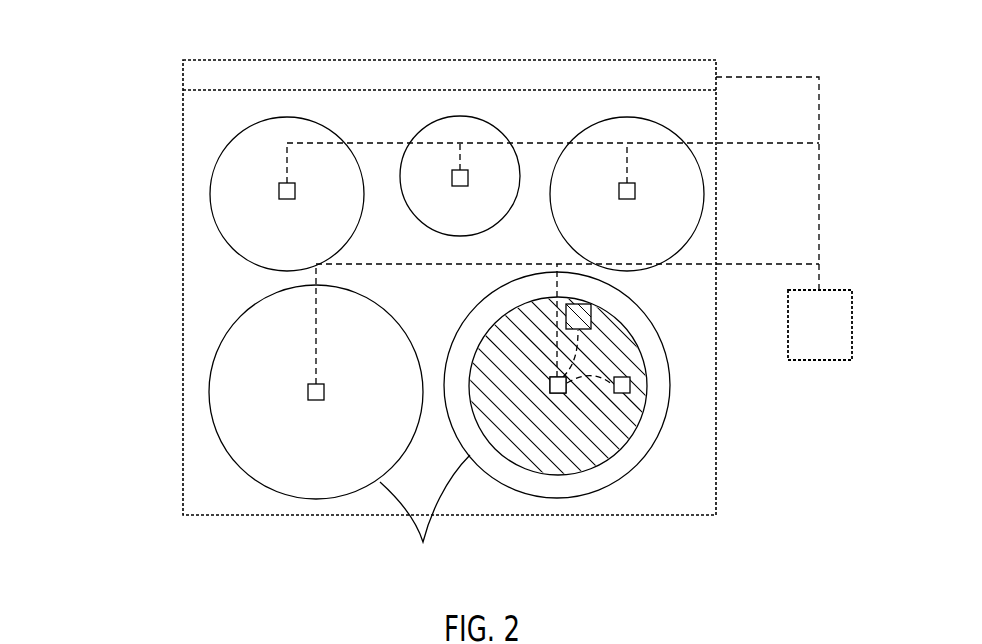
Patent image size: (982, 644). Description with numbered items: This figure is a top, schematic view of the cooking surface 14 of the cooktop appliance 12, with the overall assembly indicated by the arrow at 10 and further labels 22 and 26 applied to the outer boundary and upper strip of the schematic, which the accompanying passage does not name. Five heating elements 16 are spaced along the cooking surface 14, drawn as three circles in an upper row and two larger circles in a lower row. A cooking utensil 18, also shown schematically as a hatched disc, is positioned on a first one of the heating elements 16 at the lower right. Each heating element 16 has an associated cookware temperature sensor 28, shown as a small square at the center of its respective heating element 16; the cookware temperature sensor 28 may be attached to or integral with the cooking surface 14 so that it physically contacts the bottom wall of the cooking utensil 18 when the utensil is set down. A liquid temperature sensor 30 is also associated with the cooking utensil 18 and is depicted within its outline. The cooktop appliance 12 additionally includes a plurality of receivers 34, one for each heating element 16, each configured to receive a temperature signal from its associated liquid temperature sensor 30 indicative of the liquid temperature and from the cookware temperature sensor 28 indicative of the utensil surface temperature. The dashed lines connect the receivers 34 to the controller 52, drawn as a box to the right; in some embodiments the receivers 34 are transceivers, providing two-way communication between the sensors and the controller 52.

The vehicle system 10 is at (115, 180).
The cooktop appliance 12 is at (115, 363).
The cooking surface 14 is at (220, 294).
The heating elements 16 is at (425, 517).
The cooking utensil 18 is at (640, 440).
The panel 22 is at (585, 94).
The housing 26 is at (219, 72).
The cookware temperature sensor 28 is at (632, 385).
The liquid temperature sensor 30 is at (592, 316).
The receivers 34 is at (468, 178).
The controller 52 is at (852, 318).